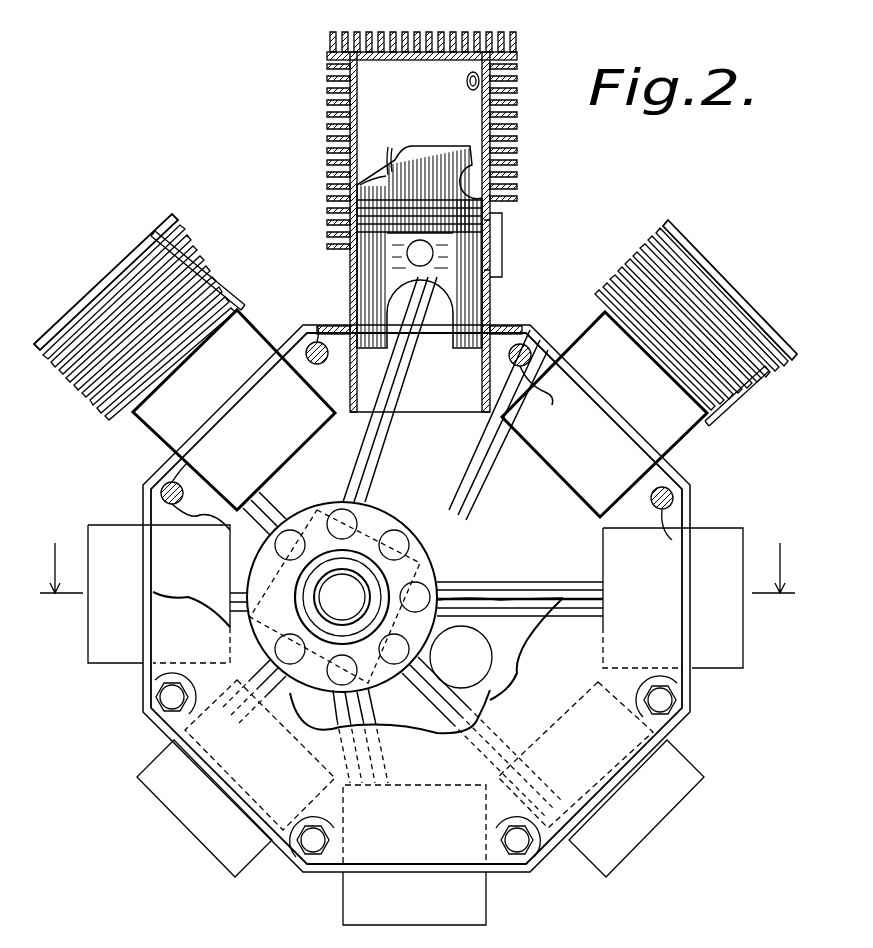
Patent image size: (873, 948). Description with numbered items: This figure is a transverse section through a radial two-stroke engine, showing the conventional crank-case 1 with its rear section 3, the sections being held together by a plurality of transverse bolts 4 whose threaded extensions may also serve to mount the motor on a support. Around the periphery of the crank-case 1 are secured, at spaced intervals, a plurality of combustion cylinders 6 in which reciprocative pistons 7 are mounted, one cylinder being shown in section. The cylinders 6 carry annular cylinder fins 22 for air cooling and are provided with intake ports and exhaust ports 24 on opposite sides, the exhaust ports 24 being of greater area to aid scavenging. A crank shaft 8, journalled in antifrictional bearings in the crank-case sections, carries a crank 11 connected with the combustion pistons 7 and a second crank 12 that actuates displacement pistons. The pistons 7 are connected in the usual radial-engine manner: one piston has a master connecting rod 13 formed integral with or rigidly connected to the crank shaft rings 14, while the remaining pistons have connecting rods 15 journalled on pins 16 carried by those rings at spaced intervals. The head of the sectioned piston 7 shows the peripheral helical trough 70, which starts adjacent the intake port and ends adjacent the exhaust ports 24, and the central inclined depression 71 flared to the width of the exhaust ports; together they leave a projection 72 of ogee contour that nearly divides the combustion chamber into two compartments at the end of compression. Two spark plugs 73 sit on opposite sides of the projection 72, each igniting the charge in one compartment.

The crank-case 1 is at (417, 585).
The rear section 3 is at (522, 330).
The transverse bolts 4 is at (317, 326).
The combustion cylinders 6 is at (415, 465).
The reciprocative pistons 7 is at (385, 228).
The crank shaft 8 is at (468, 560).
The crank 11 is at (342, 597).
The crank 12 is at (471, 648).
The master connecting rod 13 is at (237, 592).
The crank shaft rings 14 is at (318, 502).
The connecting rods 15 is at (432, 500).
The pins 16 is at (390, 535).
The annular cylinder fins 22 is at (410, 48).
The exhaust ports 24 is at (498, 243).
The helical trough 70 is at (386, 176).
The central inclined depression 71 is at (395, 62).
The projection 72 is at (428, 146).
The spark plugs 73 is at (464, 86).